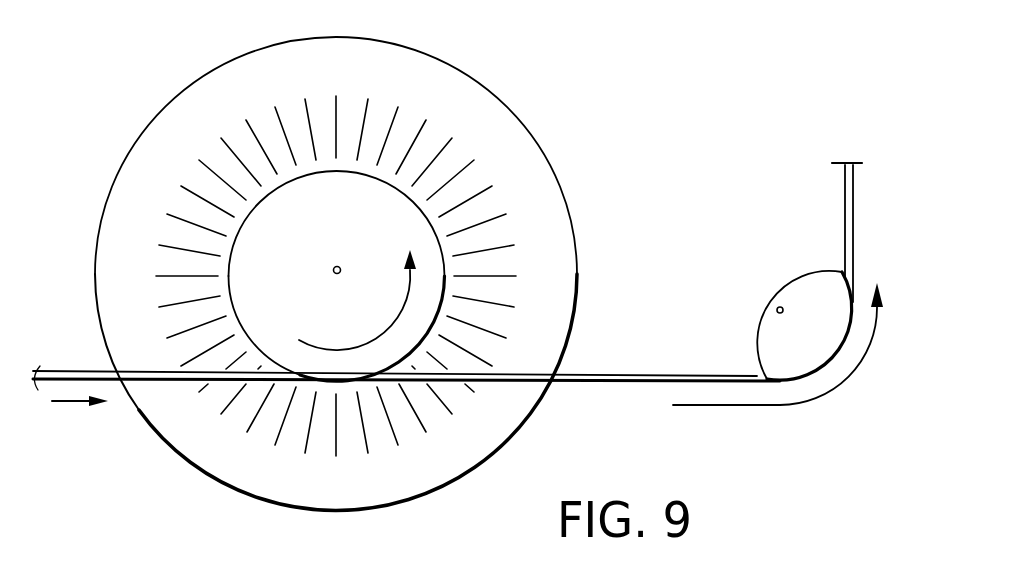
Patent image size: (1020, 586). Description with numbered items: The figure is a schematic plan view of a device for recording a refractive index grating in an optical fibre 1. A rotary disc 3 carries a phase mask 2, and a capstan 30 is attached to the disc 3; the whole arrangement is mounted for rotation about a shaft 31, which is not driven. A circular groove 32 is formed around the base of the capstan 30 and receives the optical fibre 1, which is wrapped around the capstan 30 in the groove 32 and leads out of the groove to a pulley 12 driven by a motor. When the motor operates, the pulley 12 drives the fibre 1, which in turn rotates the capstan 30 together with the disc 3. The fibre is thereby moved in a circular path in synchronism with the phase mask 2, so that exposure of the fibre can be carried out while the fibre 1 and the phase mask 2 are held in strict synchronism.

The optical fibre 1 is at (62, 371).
The phase mask 2 is at (391, 272).
The rotary disc 3 is at (577, 275).
The pulley 12 is at (772, 237).
The capstan 30 is at (416, 203).
The shaft 31 is at (340, 262).
The circular groove 32 is at (390, 366).